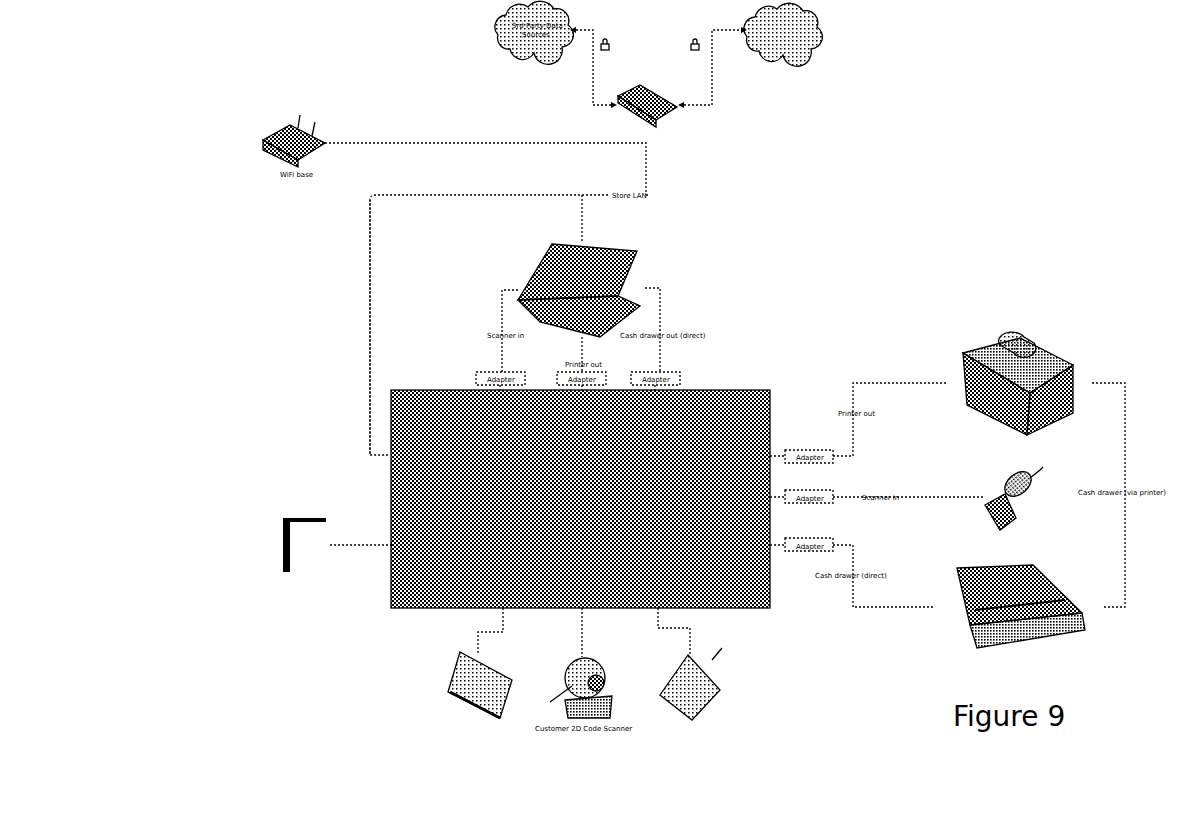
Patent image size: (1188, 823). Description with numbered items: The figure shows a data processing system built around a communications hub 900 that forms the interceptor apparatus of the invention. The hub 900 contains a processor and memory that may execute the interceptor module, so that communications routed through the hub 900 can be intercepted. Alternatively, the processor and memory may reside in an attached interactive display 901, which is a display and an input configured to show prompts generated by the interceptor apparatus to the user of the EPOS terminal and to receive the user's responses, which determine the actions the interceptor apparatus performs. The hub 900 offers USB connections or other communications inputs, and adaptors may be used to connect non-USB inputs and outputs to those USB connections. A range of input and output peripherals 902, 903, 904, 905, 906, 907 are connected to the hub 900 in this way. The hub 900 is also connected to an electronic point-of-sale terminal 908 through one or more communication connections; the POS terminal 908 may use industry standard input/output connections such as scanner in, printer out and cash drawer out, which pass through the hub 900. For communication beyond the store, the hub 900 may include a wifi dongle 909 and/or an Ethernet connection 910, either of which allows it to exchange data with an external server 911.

The communications hub 900 is at (747, 390).
The interactive display 901 is at (440, 690).
The input and output peripheral 902 is at (462, 738).
The input and output peripheral 903 is at (600, 738).
The input and output peripheral 904 is at (697, 738).
The input and output peripheral 905 is at (1070, 370).
The input and output peripheral 906 is at (1020, 490).
The input and output peripheral 907 is at (1058, 632).
The electronic point-of-sale terminal 908 is at (640, 270).
The wifi dongle 909 is at (272, 545).
The Ethernet connection 910 is at (388, 455).
The external server 911 is at (815, 38).